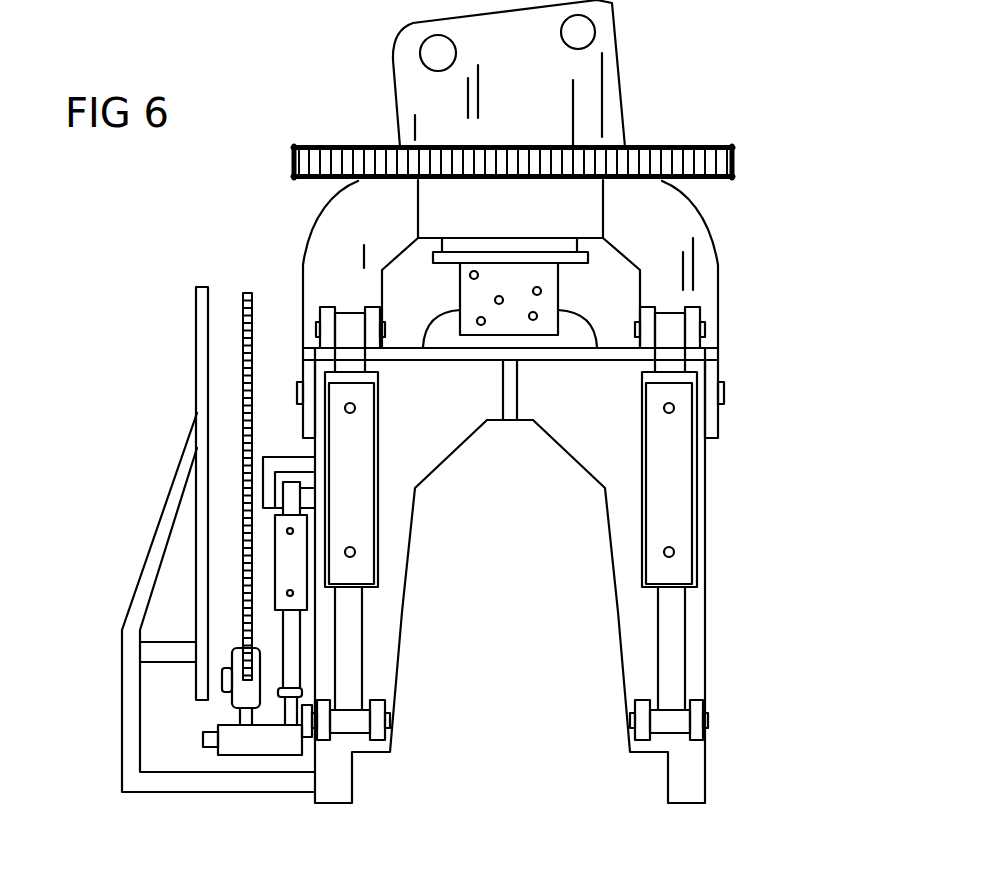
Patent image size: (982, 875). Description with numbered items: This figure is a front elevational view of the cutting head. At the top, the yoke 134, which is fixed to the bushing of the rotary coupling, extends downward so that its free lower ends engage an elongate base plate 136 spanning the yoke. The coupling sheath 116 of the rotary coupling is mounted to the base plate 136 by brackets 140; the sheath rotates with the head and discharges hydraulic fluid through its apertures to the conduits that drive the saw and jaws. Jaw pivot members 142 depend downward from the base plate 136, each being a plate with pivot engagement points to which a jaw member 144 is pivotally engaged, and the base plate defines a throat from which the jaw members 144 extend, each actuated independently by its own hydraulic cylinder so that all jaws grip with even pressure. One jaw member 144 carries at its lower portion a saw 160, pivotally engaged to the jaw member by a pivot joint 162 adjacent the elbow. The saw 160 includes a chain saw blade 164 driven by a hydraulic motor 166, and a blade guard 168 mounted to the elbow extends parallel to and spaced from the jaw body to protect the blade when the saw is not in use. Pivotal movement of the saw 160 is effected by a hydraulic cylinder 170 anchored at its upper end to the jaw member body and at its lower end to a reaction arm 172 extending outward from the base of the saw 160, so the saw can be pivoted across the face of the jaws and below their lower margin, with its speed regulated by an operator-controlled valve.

The coupling sheath 116 is at (537, 275).
The yoke 134 is at (715, 244).
The base plate 136 is at (423, 353).
The brackets 140 is at (577, 333).
The jaw pivot members 142 is at (722, 432).
The jaw member 144 is at (708, 617).
The saw 160 is at (138, 536).
The pivot joint 162 is at (308, 740).
The chain saw blade 164 is at (243, 358).
The hydraulic motor 166 is at (237, 745).
The blade guard 168 is at (204, 316).
The hydraulic cylinder 170 is at (298, 583).
The reaction arm 172 is at (303, 702).